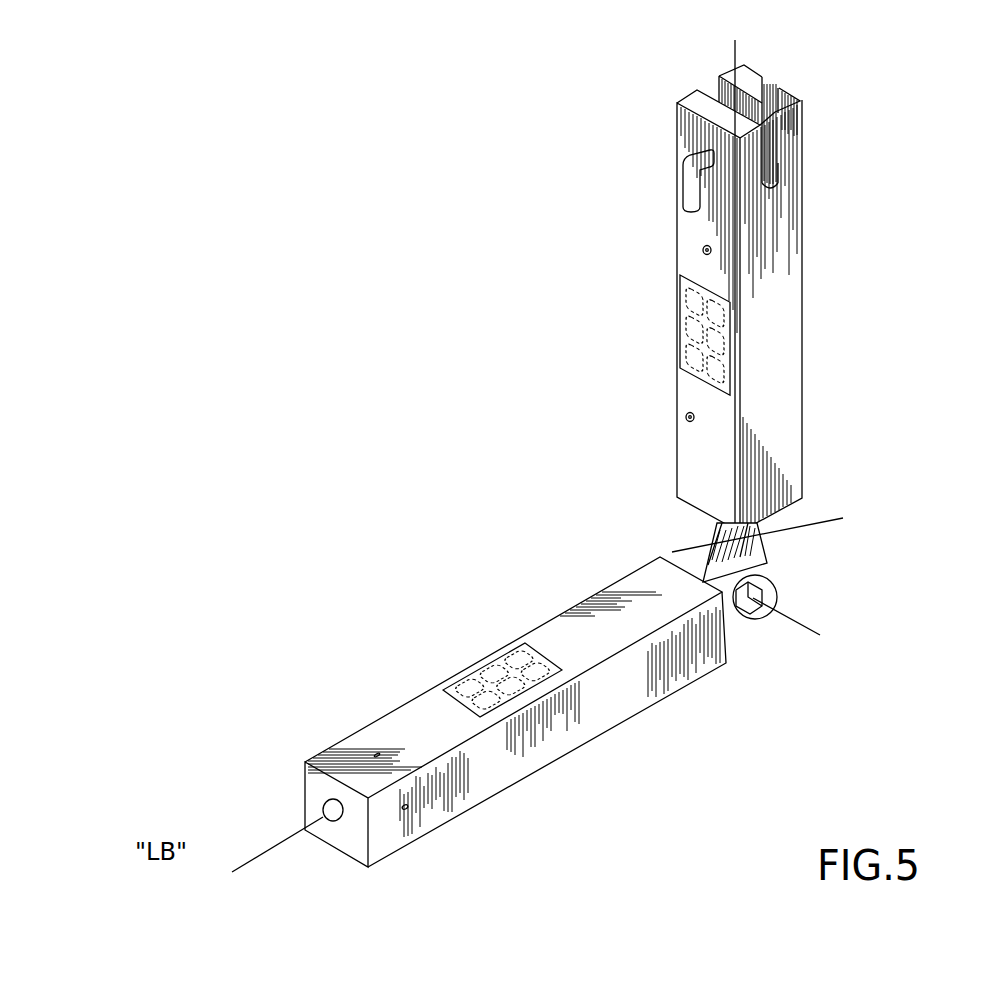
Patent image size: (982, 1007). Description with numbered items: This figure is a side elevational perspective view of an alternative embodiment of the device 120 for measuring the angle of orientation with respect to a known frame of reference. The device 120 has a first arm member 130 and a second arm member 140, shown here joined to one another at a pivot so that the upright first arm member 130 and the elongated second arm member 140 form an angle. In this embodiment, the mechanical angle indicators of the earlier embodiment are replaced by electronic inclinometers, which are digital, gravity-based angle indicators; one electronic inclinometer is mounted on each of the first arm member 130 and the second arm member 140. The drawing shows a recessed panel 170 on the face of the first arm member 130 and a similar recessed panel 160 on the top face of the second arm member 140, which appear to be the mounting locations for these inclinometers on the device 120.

The device 120 is at (395, 403).
The first arm member 130 is at (787, 368).
The second arm member 140 is at (612, 702).
The outlet panel on bar 160 is at (480, 677).
The outlet panel on post 170 is at (695, 327).